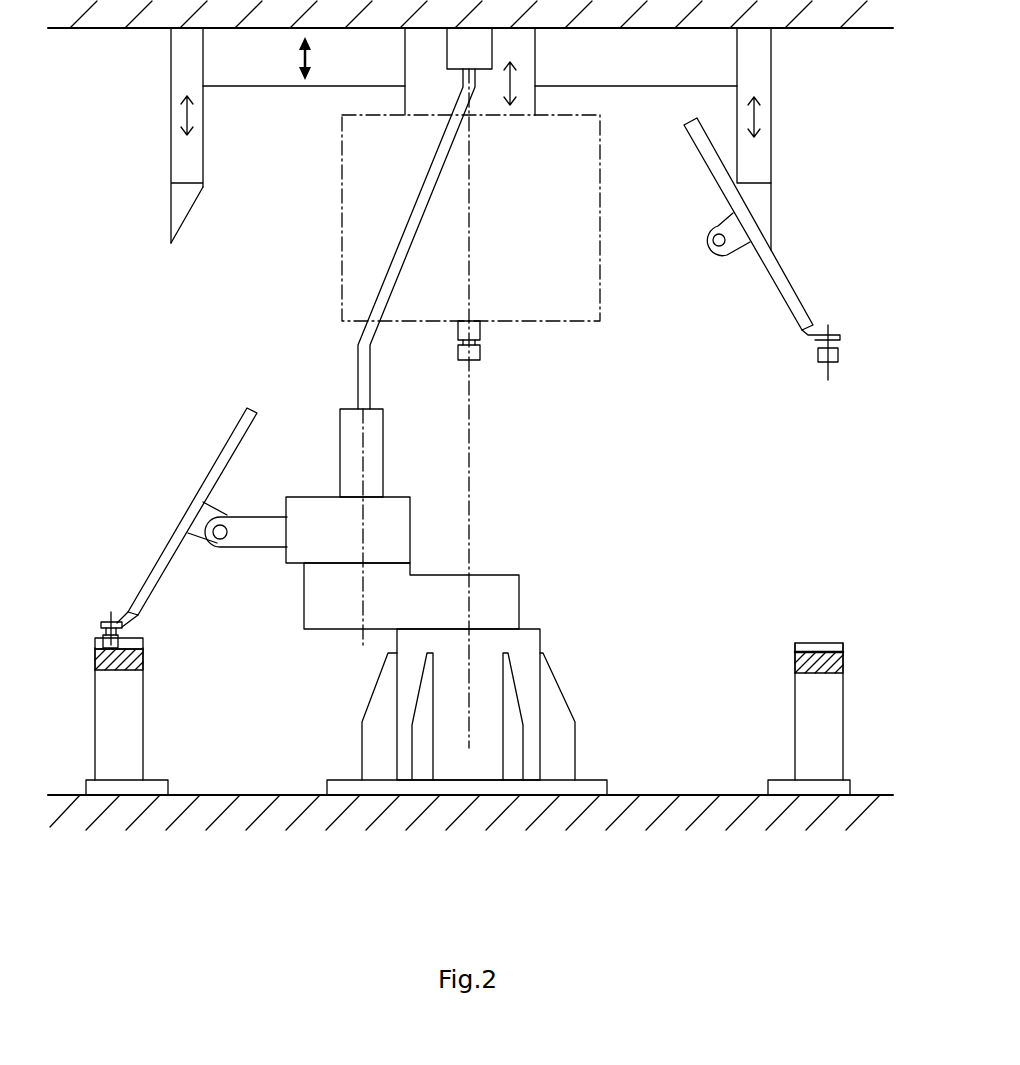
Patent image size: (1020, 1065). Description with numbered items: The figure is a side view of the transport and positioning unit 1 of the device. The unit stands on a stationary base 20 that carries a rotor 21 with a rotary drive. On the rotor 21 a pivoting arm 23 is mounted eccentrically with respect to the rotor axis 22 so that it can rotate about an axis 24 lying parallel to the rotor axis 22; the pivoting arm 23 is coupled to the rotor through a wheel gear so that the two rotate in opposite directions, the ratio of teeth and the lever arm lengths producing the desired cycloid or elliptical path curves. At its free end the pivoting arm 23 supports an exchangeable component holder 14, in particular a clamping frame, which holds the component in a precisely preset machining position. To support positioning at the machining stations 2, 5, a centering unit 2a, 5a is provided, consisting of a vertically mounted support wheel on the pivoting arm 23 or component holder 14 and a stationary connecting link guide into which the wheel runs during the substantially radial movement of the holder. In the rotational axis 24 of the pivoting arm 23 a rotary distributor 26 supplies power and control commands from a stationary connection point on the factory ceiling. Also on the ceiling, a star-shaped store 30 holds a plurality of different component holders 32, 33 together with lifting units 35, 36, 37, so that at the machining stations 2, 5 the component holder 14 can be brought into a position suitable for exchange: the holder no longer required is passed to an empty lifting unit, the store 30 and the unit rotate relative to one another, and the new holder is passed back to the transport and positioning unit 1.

The transport and positioning unit 1 is at (332, 657).
The machining station 2 is at (160, 719).
The centering unit / connecting link guide 2a is at (103, 657).
The machining station 5 is at (770, 693).
The centering unit / connecting link guide 5a is at (835, 668).
The component holder 14 is at (147, 580).
The stationary base 20 is at (524, 672).
The rotor 21 is at (504, 603).
The rotor axis 22 is at (468, 497).
The pivoting arm 23 is at (318, 510).
The axis 24 is at (363, 465).
The rotary distributor 26 is at (352, 430).
The store 30 is at (128, 111).
The component holder 32 is at (578, 283).
The component holder 33 is at (790, 292).
The lifting unit 35 is at (178, 155).
The lifting unit 36 is at (527, 93).
The lifting unit 37 is at (758, 157).